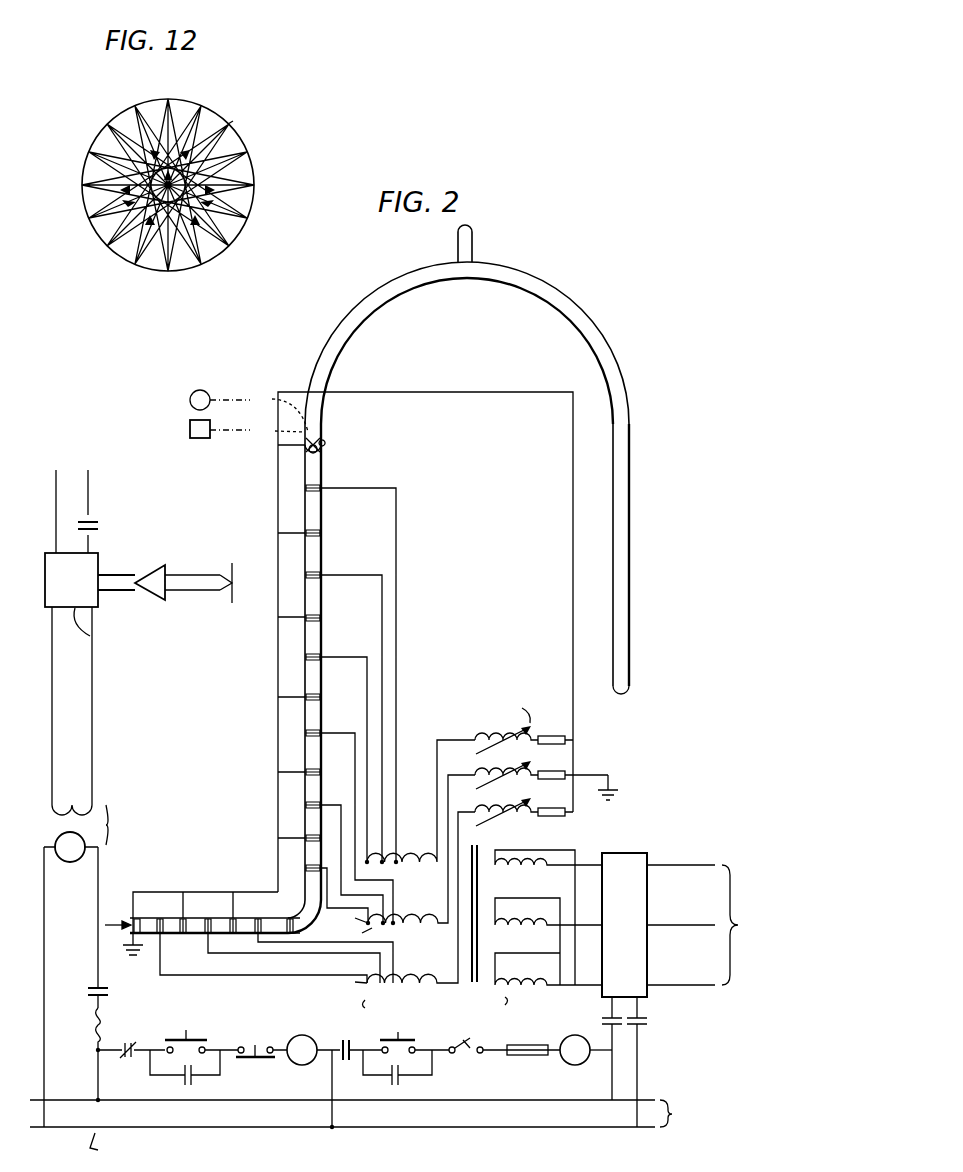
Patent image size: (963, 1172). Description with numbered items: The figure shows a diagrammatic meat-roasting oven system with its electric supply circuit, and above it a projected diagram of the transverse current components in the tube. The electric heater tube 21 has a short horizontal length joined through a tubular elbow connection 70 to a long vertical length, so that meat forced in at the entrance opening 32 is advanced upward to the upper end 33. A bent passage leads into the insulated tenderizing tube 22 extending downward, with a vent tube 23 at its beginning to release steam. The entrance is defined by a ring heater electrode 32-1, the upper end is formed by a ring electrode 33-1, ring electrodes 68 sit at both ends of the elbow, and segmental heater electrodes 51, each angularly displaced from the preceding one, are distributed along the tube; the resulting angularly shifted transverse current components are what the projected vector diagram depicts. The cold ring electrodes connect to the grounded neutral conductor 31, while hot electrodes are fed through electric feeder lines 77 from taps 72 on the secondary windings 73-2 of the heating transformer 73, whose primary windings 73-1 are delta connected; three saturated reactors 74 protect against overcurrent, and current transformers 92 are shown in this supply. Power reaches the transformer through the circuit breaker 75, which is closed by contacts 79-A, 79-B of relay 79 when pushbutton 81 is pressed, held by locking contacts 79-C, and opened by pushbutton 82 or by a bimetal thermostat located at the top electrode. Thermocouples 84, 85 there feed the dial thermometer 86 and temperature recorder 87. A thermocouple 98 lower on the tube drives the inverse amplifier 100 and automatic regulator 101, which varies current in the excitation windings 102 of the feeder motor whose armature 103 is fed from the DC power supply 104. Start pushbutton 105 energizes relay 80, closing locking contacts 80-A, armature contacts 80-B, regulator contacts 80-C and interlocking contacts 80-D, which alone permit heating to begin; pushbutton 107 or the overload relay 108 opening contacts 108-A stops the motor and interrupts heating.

In FIG. 2, the electric heater tube 21 is at (305, 690).
In FIG. 2, the tenderizing tube 22 is at (631, 449).
In FIG. 2, the vent tube 23 is at (474, 240).
In FIG. 2, the grounded neutral conductor 31 is at (385, 392).
In FIG. 2, the entrance opening 32 is at (128, 922).
In FIG. 2, the heater electrode 32-1 is at (140, 919).
In FIG. 2, the upper end of heater tube 33 is at (305, 451).
In FIG. 2, the heater electrode 33-1 is at (321, 448).
In FIG. 12, the segmental heater electrodes 51 is at (167, 186).
In FIG. 2, the segmental heater electrodes 51 is at (305, 532).
In FIG. 12, the ring heater electrodes 68 is at (239, 120).
In FIG. 2, the ring heater electrodes 68 is at (305, 885).
In FIG. 2, the tubular elbow connection 70 is at (357, 935).
In FIG. 2, the taps 72 is at (352, 950).
In FIG. 2, the heating transformer 73 is at (495, 850).
In FIG. 2, the primary windings 73-1 is at (506, 870).
In FIG. 2, the secondary windings 73-2 is at (400, 860).
In FIG. 2, the saturated reactors 74 is at (482, 738).
In FIG. 2, the circuit breaker 75 is at (625, 845).
In FIG. 2, the electric feeder lines 77 is at (367, 660).
In FIG. 2, the relay 79 is at (566, 1064).
In FIG. 2, the relay contact 79-A is at (600, 1021).
In FIG. 2, the relay contact 79-B is at (650, 1022).
In FIG. 2, the locking contacts 79-C is at (404, 1082).
In FIG. 2, the relay 80 is at (292, 1064).
In FIG. 2, the locking contacts 80-A is at (196, 1080).
In FIG. 2, the contacts 80-B is at (116, 996).
In FIG. 2, the contacts 80-C is at (100, 526).
In FIG. 2, the interlocking contacts 80-D is at (347, 1038).
In FIG. 2, the pushbutton 81 is at (402, 1033).
In FIG. 2, the pushbutton 82 is at (468, 1037).
In FIG. 2, the thermocouple 84 is at (279, 411).
In FIG. 2, the thermocouple 85 is at (277, 430).
In FIG. 2, the dial thermometer 86 is at (190, 400).
In FIG. 2, the temperature recorder 87 is at (190, 430).
In FIG. 2, the current transformers 92 is at (552, 806).
In FIG. 2, the thermocouple 98 is at (300, 540).
In FIG. 2, the inverse amplifier 100 is at (150, 600).
In FIG. 2, the automatic regulator 101 is at (44, 585).
In FIG. 2, the excitation windings 102 is at (52, 806).
In FIG. 2, the armature 103 is at (56, 860).
In FIG. 2, the DC power supply 104 is at (366, 1130).
In FIG. 2, the start pushbutton 105 is at (192, 1030).
In FIG. 2, the pushbutton 107 is at (256, 1044).
In FIG. 2, the overload relay 108 is at (90, 1030).
In FIG. 2, the overload contacts 108-A is at (118, 1062).